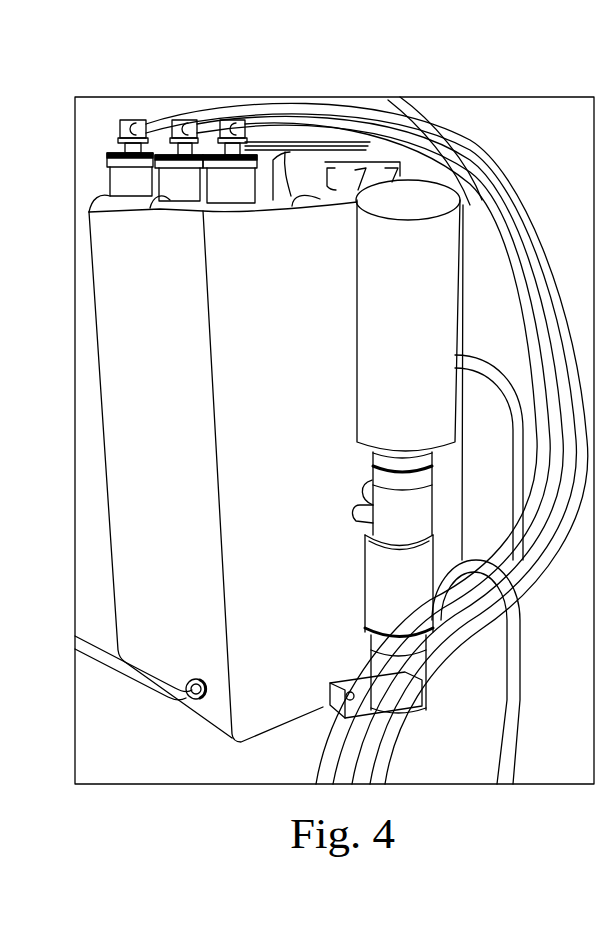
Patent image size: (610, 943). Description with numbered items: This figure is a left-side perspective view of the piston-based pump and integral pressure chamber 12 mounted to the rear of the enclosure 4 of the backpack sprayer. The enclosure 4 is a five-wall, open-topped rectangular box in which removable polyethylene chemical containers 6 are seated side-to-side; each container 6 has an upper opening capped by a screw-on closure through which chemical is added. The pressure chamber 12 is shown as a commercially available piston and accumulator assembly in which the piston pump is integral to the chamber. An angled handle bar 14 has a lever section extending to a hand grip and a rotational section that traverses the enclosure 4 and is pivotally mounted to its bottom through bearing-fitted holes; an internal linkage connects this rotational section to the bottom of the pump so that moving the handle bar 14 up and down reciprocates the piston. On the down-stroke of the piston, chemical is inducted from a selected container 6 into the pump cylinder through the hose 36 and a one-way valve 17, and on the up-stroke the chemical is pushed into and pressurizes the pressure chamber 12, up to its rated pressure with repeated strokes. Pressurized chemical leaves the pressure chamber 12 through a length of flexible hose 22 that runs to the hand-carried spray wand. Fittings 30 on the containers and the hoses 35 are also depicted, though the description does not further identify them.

The enclosure 4 is at (166, 410).
The chemical containers 6 is at (190, 208).
The pressure chamber 12 is at (357, 272).
The handle bar 14 is at (146, 690).
The one-way valve 17 is at (352, 517).
The flexible hose 22 is at (510, 757).
The hose fittings 30 is at (133, 118).
The hoses 35 is at (417, 157).
The hose 36 is at (484, 358).